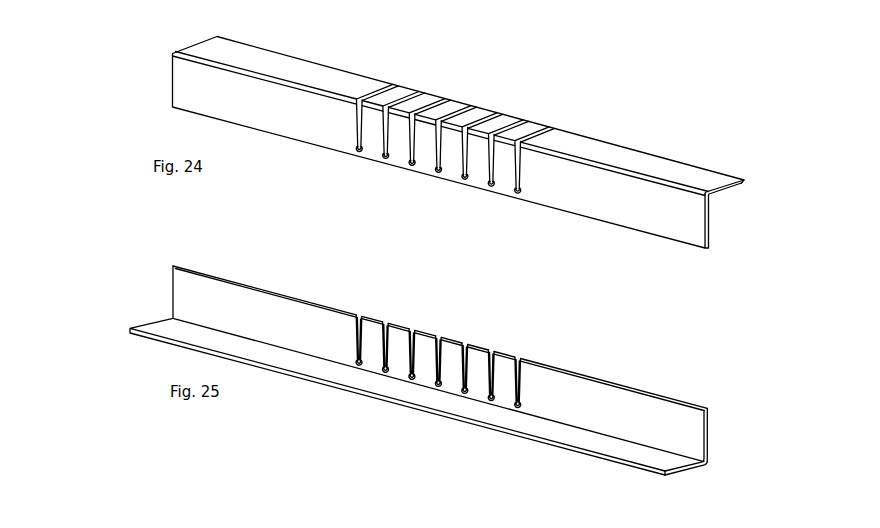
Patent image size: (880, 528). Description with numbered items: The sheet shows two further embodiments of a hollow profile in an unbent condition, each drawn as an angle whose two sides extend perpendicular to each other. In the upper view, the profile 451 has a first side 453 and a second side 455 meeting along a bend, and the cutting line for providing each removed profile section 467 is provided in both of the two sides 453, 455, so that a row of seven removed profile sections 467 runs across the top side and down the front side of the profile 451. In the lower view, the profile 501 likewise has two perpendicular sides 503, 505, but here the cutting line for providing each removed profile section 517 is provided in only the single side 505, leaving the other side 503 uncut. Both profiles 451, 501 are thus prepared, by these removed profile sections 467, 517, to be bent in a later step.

In FIG. 24, the profile 451 is at (157, 45).
In FIG. 24, the side 455 is at (648, 163).
In FIG. 24, the side 453 is at (640, 217).
In FIG. 24, the removed profile section 467 is at (500, 105).
In FIG. 25, the profile 501 is at (145, 270).
In FIG. 25, the side 505 is at (625, 407).
In FIG. 25, the side 503 is at (555, 430).
In FIG. 25, the removed profile section 517 is at (450, 322).